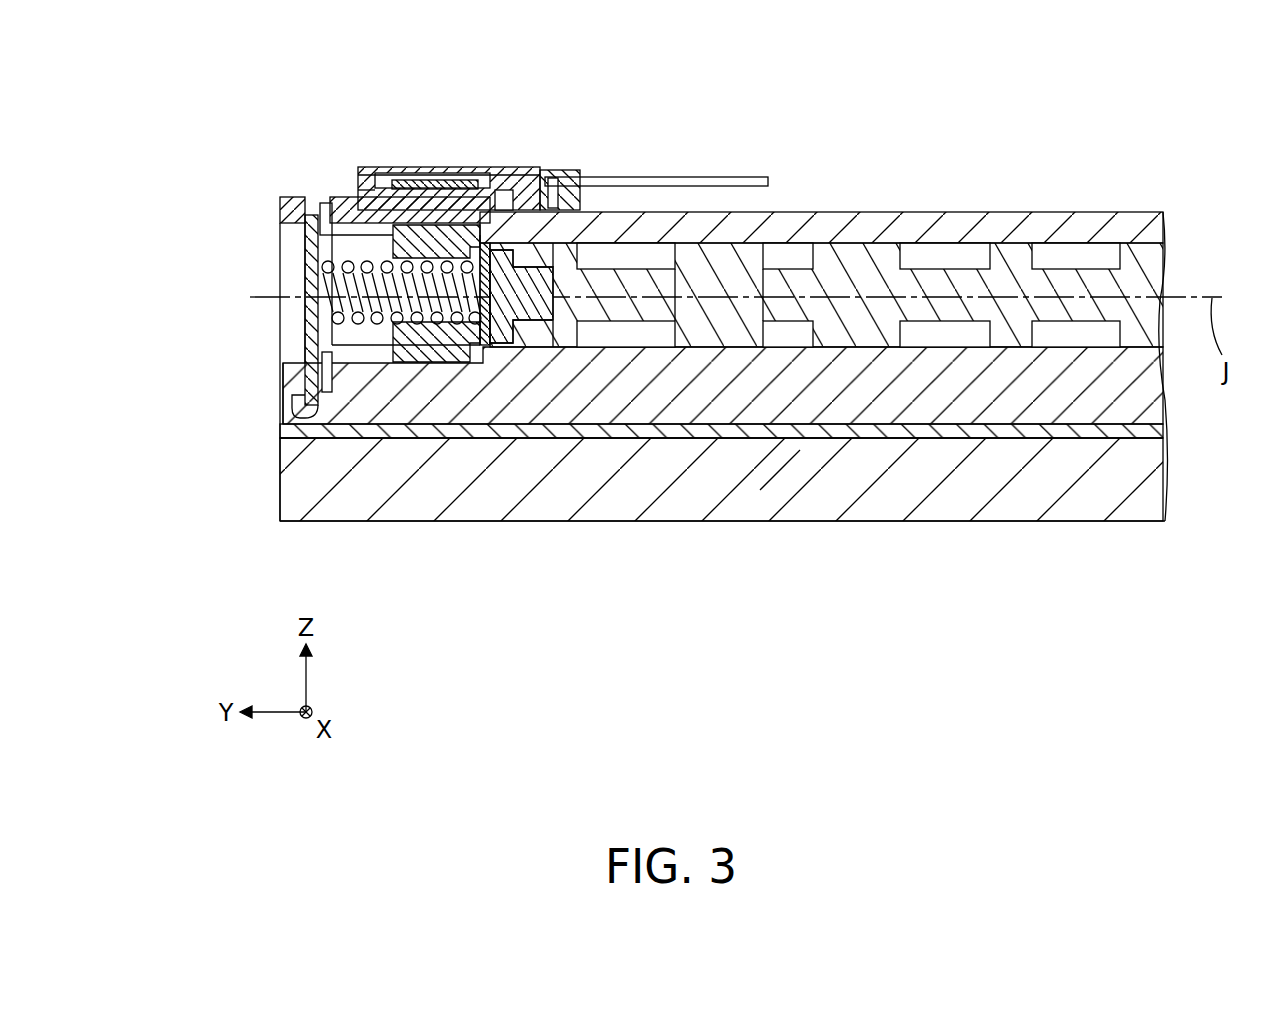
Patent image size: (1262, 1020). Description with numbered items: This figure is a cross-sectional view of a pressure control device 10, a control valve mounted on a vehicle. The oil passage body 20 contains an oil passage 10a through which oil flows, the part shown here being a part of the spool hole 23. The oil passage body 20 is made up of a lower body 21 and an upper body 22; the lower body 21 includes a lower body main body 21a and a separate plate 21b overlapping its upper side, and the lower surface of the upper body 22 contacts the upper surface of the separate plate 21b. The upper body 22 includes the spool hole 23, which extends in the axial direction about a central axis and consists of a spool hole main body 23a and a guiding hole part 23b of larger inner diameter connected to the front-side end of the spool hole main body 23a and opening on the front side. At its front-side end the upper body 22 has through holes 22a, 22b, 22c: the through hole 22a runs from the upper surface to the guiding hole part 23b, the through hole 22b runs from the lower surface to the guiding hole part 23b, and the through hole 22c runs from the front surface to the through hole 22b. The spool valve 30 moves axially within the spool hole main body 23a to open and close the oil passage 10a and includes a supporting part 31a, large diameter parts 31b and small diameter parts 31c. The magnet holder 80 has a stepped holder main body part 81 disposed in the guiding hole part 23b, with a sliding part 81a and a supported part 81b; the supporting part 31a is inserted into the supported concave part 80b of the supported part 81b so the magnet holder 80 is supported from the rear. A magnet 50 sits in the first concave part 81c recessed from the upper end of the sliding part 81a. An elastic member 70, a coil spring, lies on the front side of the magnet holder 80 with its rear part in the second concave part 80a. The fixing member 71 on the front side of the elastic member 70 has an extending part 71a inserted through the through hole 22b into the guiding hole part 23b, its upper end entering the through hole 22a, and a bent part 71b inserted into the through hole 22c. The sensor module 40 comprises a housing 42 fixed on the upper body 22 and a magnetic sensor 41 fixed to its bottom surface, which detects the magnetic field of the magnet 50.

The pressure control device 10 is at (1118, 100).
The oil passage 10a is at (945, 352).
The oil passage body 20 is at (721, 508).
The lower body 21 is at (1058, 533).
The lower body main body 21a is at (782, 490).
The separate plate 21b is at (850, 440).
The upper body 22 is at (1105, 400).
The through hole 22a is at (302, 197).
The through hole 22b is at (332, 380).
The through hole 22c is at (300, 380).
The spool hole 23 is at (526, 134).
The spool hole main body 23a is at (550, 152).
The guiding hole part 23b is at (505, 192).
The spool valve 30 is at (1050, 268).
The supporting part 31a is at (550, 258).
The large diameter parts 31b is at (720, 345).
The small diameter parts 31c is at (815, 275).
The sensor module 40 is at (566, 168).
The magnetic sensor 41 is at (420, 185).
The housing 42 is at (590, 178).
The magnet 50 is at (400, 200).
The elastic member 70 is at (326, 203).
The fixing member 71 is at (244, 330).
The extending part 71a is at (310, 335).
The bent part 71b is at (264, 417).
The magnet holder 80 is at (397, 418).
The second concave part 80a is at (337, 292).
The supported concave part 80b is at (498, 300).
The holder main body part 81 is at (469, 418).
The sliding part 81a is at (427, 340).
The supported part 81b is at (472, 256).
The first concave part 81c is at (445, 225).